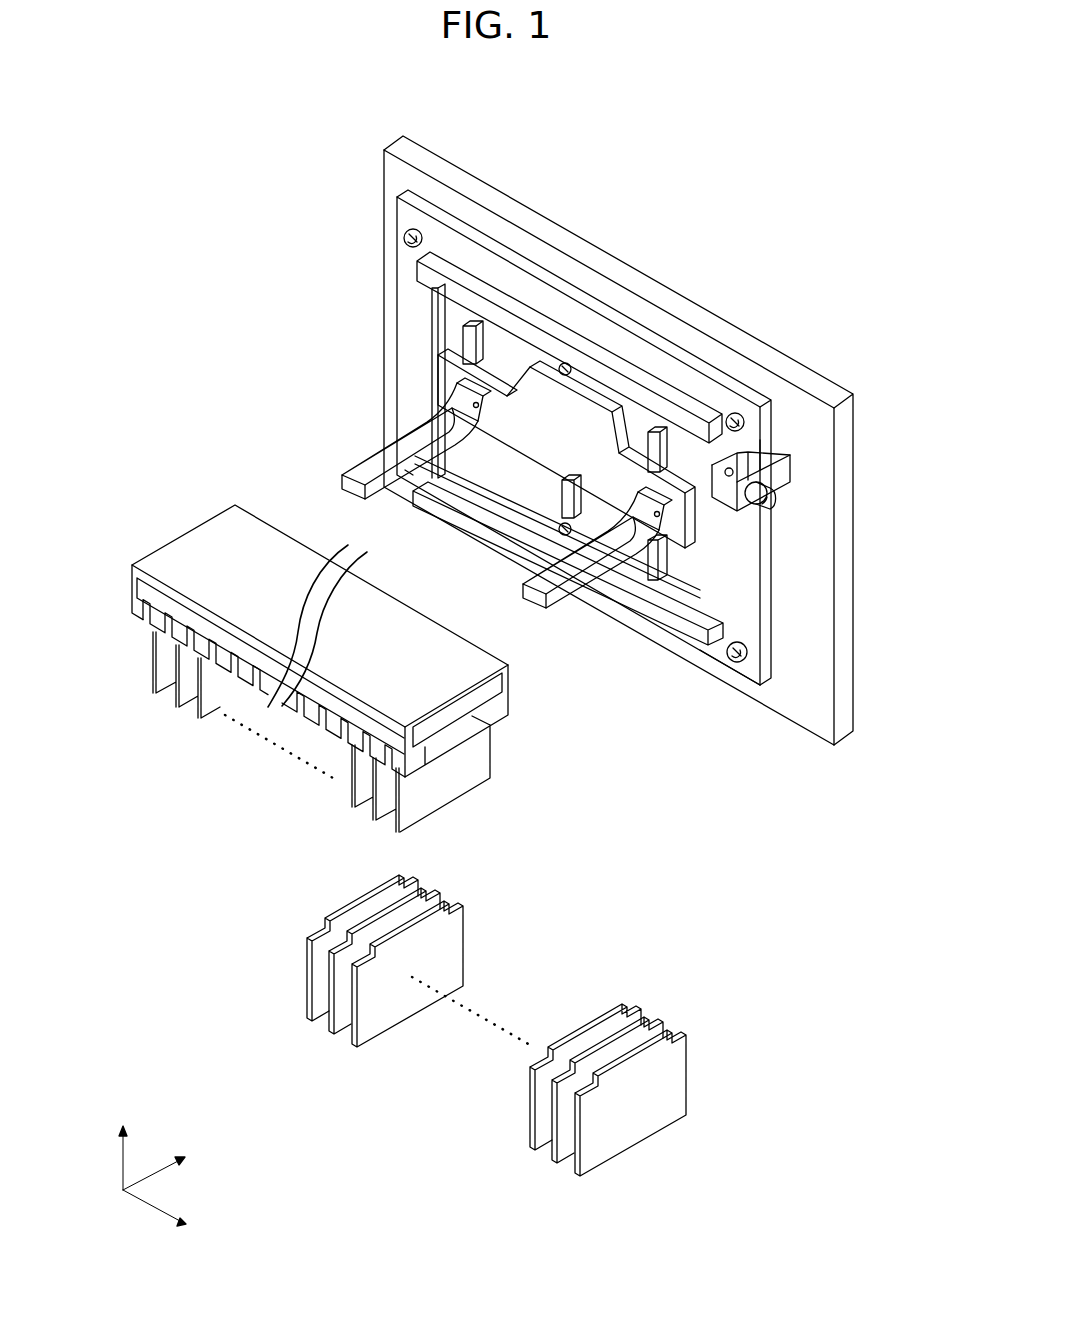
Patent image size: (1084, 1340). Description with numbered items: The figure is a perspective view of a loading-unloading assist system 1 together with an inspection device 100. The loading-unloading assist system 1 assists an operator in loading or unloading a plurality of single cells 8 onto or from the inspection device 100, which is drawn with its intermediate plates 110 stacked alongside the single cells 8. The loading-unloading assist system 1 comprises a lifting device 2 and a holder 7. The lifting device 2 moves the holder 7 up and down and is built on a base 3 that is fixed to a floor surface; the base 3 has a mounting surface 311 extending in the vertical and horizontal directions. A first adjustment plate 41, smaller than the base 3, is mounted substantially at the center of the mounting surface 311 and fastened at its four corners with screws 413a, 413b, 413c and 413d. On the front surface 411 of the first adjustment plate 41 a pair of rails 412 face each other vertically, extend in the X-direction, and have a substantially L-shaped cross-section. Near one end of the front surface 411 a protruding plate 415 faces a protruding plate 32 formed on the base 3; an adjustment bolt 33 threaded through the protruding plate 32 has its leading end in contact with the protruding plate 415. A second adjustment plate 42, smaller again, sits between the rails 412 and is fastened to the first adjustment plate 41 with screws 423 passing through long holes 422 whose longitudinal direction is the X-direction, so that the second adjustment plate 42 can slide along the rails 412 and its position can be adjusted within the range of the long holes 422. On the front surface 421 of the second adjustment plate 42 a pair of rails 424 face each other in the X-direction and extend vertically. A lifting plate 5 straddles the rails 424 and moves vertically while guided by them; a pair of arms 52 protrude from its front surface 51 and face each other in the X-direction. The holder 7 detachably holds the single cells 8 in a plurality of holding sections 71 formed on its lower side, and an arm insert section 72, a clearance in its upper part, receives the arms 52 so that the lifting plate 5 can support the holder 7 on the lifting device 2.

The loading-unloading assist system 1 is at (104, 399).
The lifting device 2 is at (322, 381).
The base 3 is at (800, 384).
The mounting surface 311 is at (814, 521).
The first adjustment plate 41 is at (734, 392).
The front surface 411 is at (752, 541).
The front surface 421 is at (718, 590).
The protruding plate 415 is at (745, 450).
The screw 413a is at (409, 474).
The screw 413b is at (404, 236).
The screw 413c is at (739, 414).
The screw 413d is at (737, 663).
The rails 412 is at (637, 372).
The second adjustment plate 42 is at (421, 347).
The rails 424 is at (477, 322).
The screws 423 is at (560, 363).
The long holes 422 is at (576, 377).
The lifting plate 5 is at (690, 522).
The front surface 51 is at (453, 352).
The arms 52 is at (383, 463).
The protruding plate 32 is at (790, 452).
The adjustment bolt 33 is at (776, 474).
The holder 7 is at (172, 498).
The arm insert section 72 is at (152, 598).
The holding sections 71 is at (143, 614).
The single cell 8 is at (198, 720).
The inspection device 100 is at (673, 982).
The intermediate plate 110 is at (352, 1044).